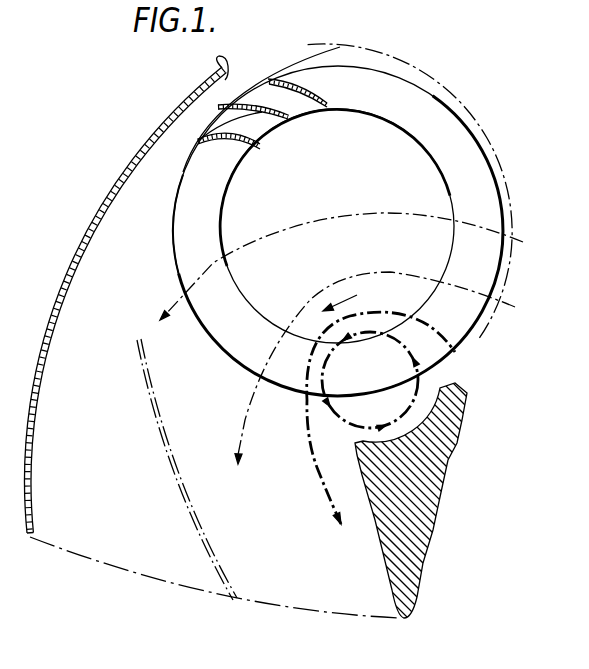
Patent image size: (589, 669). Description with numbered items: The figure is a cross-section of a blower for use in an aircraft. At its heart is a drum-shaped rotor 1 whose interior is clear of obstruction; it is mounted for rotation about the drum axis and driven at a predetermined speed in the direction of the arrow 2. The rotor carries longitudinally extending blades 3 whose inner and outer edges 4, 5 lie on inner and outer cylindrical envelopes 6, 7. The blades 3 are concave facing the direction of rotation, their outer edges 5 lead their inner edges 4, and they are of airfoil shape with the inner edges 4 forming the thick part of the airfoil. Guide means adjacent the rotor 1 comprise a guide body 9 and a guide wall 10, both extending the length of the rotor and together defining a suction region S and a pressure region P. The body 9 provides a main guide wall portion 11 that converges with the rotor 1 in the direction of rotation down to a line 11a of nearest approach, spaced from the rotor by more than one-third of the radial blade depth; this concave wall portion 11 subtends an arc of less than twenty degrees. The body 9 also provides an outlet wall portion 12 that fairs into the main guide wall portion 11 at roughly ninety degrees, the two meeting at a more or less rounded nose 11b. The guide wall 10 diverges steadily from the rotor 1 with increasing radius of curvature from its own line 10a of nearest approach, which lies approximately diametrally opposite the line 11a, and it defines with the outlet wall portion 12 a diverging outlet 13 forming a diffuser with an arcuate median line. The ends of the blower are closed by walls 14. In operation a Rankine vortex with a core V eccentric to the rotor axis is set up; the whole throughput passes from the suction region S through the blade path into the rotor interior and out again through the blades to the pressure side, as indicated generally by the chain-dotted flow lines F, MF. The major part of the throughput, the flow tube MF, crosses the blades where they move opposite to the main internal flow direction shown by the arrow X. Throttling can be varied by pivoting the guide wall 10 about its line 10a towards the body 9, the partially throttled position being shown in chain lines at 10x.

The drum-shaped rotor 1 is at (443, 127).
The arrow 2 is at (322, 38).
The blades 3 is at (250, 121).
The inner edges 4 is at (280, 116).
The outer edges 5 is at (218, 107).
The inner cylindrical envelope 6 is at (221, 213).
The outer cylindrical envelope 7 is at (173, 214).
The guide body 9 is at (415, 463).
The guide wall 10 is at (78, 266).
The line of nearest approach of the guide wall 10a is at (215, 68).
The throttled position of the guide wall 10x is at (193, 527).
The main guide wall portion 11 is at (445, 401).
The line of nearest approach of the main guide wall portion 11a is at (458, 383).
The rounded nose 11b is at (355, 445).
The outlet wall portion 12 is at (373, 547).
The diverging outlet 13 is at (168, 495).
The end walls 14 is at (44, 530).
The suction region S is at (560, 180).
The pressure region P is at (215, 401).
The flow lines F is at (346, 273).
The main flow tube MF is at (366, 317).
The arrow X is at (338, 303).
The vortex core V is at (368, 333).